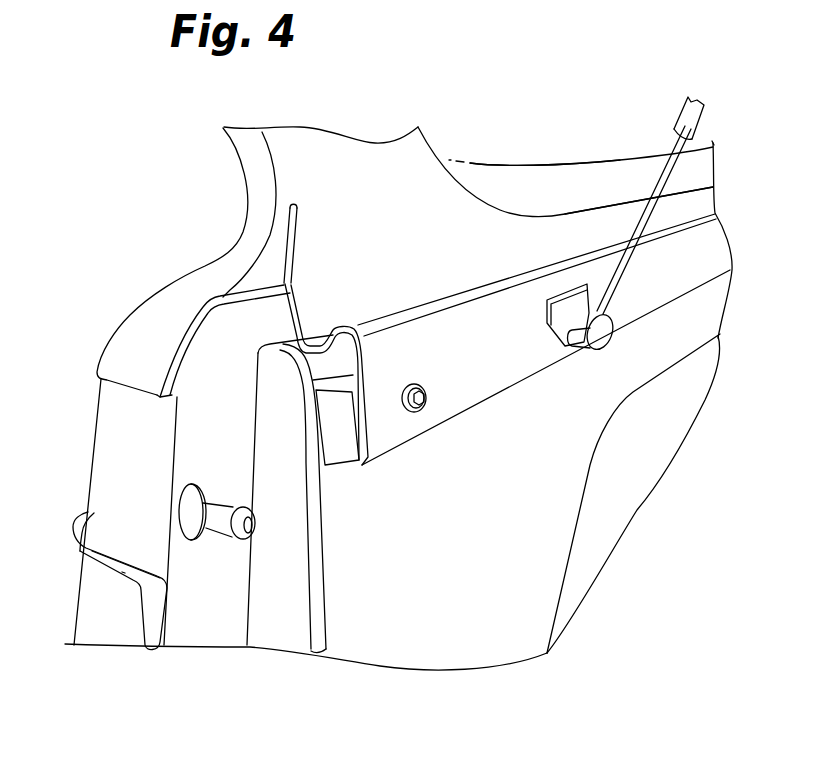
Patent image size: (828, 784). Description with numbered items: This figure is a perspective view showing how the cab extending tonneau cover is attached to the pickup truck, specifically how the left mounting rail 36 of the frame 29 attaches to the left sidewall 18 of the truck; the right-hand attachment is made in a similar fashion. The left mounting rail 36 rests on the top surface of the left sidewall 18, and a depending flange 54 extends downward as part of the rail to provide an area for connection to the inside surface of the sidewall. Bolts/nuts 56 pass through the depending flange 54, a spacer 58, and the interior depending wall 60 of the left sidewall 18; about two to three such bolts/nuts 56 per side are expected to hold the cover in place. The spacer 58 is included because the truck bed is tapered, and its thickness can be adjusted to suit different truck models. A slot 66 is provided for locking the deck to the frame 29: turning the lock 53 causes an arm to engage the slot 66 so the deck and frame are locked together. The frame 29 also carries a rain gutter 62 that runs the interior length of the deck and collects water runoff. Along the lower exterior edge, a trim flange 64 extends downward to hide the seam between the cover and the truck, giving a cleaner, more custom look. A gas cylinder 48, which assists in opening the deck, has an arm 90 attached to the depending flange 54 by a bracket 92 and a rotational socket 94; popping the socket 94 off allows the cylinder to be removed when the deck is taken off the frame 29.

The left sidewall 18 is at (528, 453).
The frame 29 is at (513, 180).
The left mounting rail 36 is at (577, 208).
The gas cylinder 48 is at (692, 120).
The lock 53 is at (252, 300).
The depending flange 54 is at (493, 366).
The bolts/nuts 56 is at (423, 404).
The spacer 58 is at (342, 448).
The interior depending wall 60 is at (312, 453).
The rain gutter 62 is at (327, 340).
The trim flange 64 is at (120, 353).
The slot 66 is at (300, 218).
The arm 90 is at (627, 280).
The bracket 92 is at (563, 310).
The rotational socket 94 is at (603, 340).